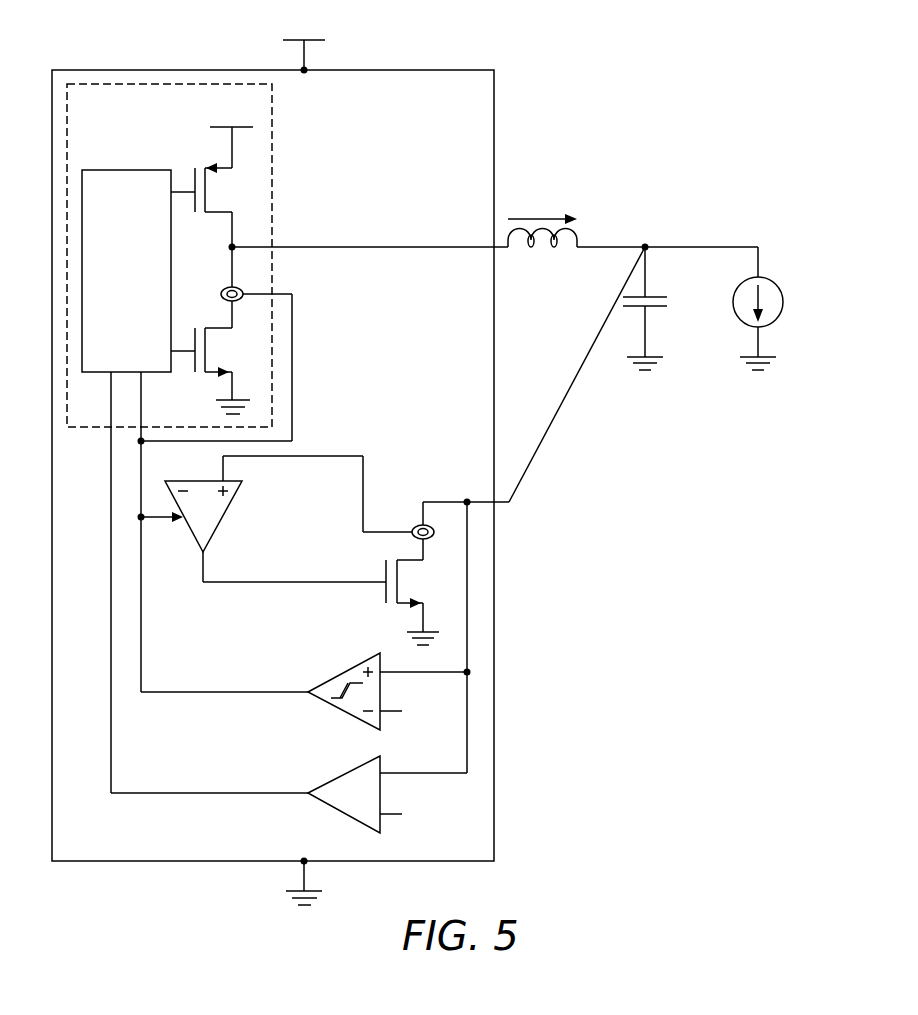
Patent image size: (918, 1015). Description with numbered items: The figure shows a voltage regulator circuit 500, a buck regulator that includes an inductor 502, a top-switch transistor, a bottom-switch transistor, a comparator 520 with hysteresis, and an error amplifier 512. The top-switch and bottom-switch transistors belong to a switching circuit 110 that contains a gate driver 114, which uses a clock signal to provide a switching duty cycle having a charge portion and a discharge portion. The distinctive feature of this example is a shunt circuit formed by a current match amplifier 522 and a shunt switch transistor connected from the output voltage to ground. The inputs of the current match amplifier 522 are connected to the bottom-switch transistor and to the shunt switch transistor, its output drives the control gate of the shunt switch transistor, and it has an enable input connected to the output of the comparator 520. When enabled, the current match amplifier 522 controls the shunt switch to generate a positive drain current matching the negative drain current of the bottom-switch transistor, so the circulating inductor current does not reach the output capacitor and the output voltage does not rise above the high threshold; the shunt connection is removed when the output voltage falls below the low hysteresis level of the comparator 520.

The voltage regulator circuit 500 is at (700, 70).
The switching circuit 110 is at (272, 157).
The gate driver 114 is at (127, 170).
The inductor 502 is at (558, 252).
The current match amplifier 522 is at (222, 515).
The comparator 520 is at (345, 669).
The error amplifier 512 is at (345, 770).